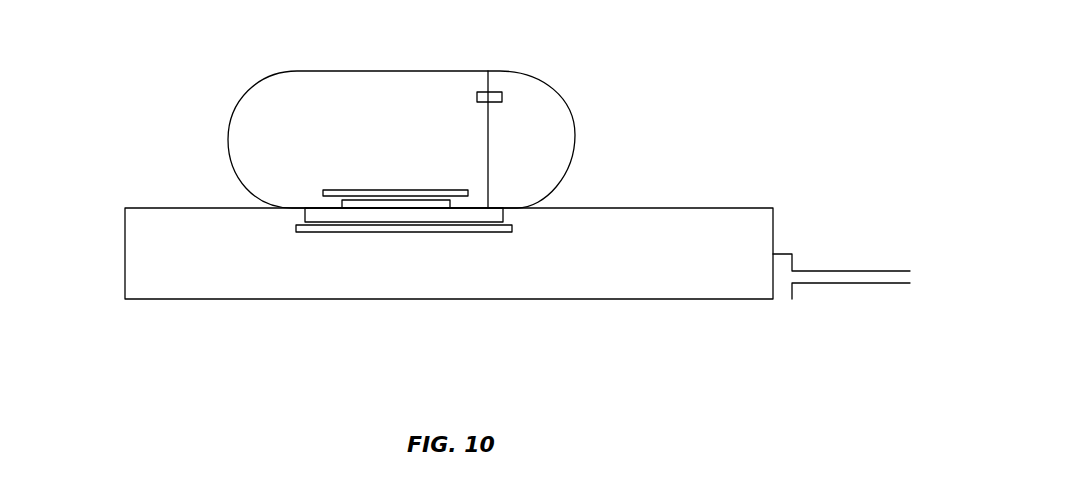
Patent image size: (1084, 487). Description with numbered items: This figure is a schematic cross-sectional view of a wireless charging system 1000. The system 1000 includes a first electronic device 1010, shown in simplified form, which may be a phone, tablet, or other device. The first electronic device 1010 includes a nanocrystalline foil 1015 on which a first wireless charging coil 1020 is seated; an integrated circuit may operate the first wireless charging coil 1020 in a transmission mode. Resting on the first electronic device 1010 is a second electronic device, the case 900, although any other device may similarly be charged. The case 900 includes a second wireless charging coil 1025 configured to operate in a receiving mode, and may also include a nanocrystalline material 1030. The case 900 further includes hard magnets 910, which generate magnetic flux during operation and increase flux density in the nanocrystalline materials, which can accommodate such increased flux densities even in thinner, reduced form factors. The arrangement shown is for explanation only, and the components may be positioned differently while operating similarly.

The wireless charging system 1000 is at (113, 78).
The case 900 is at (337, 70).
The hard magnets 910 is at (502, 98).
The nanocrystalline material 1030 is at (488, 187).
The second wireless charging coil 1025 is at (337, 203).
The first electronic device 1010 is at (162, 300).
The first wireless charging coil 1020 is at (503, 220).
The nanocrystalline foil 1015 is at (333, 232).